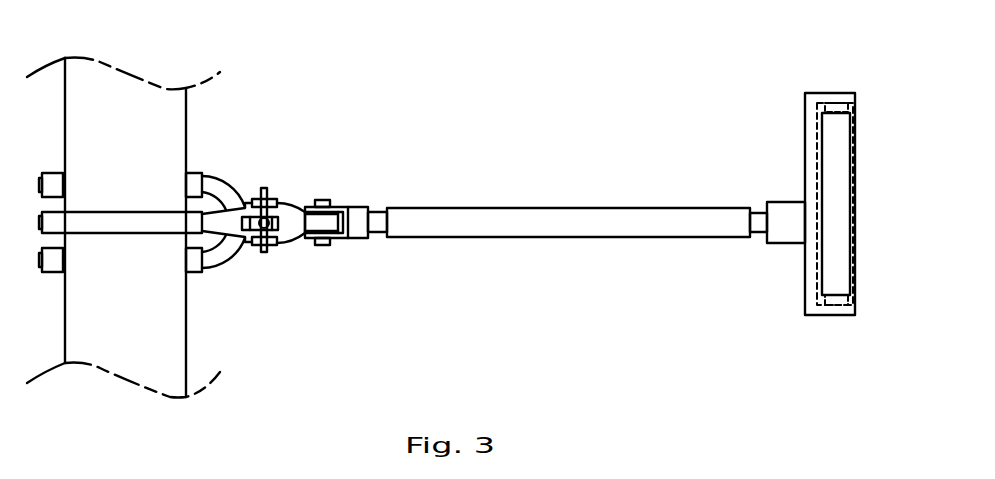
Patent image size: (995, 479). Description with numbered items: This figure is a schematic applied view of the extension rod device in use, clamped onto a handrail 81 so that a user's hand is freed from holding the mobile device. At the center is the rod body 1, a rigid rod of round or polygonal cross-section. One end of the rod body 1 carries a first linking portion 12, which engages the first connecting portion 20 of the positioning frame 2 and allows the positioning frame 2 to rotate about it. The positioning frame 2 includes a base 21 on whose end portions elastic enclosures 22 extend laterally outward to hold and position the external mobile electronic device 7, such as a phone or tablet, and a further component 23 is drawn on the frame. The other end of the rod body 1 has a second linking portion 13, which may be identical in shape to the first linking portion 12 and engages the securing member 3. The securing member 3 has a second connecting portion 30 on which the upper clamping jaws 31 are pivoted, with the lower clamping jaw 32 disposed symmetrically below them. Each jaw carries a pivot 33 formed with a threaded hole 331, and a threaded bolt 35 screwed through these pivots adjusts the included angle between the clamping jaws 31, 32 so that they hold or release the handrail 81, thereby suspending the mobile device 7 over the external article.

The rod body 1 is at (553, 202).
The positioning frame 2 is at (827, 200).
The securing member 3 is at (283, 168).
The external mobile electronic device 7 is at (851, 280).
The first linking portion 12 is at (757, 232).
The second linking portion 13 is at (377, 222).
The first connecting portion 20 is at (783, 210).
The base 21 is at (805, 170).
The elastic enclosures 22 is at (835, 100).
The retaining strip 23 is at (852, 112).
The second connecting portion 30 is at (352, 215).
The upper clamping jaws 31 is at (213, 220).
The lower clamping jaw 32 is at (208, 262).
The pivot 33 is at (277, 243).
The threaded hole 331 is at (257, 235).
The threaded bolt 35 is at (278, 205).
The handrail 81 is at (153, 130).